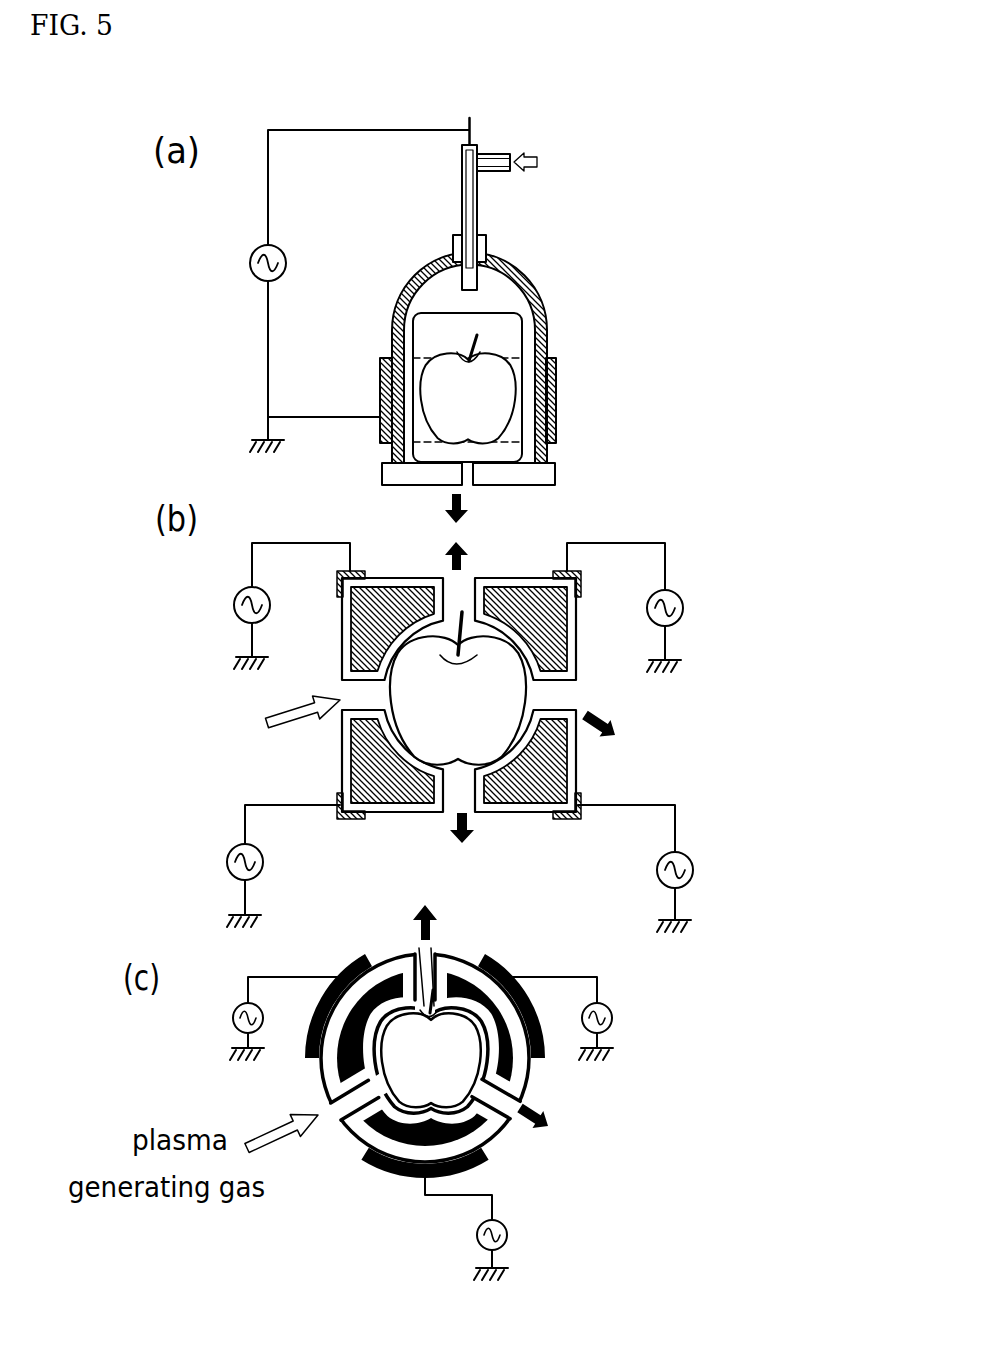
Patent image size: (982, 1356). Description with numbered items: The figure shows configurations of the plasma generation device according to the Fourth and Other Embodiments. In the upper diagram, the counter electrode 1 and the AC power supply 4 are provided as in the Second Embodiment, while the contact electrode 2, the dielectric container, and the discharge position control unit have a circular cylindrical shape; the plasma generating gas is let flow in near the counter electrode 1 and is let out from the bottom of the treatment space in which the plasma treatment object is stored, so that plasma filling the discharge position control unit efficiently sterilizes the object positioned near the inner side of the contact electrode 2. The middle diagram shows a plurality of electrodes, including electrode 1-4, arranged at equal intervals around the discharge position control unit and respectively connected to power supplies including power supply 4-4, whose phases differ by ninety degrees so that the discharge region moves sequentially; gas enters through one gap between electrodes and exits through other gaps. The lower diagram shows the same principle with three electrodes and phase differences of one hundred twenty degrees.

The counter electrode 1 is at (478, 215).
The contact electrode 2 is at (556, 404).
The AC power supply 4 is at (283, 253).
The electrode 1-4 is at (345, 573).
The power supply 4-4 is at (266, 603).